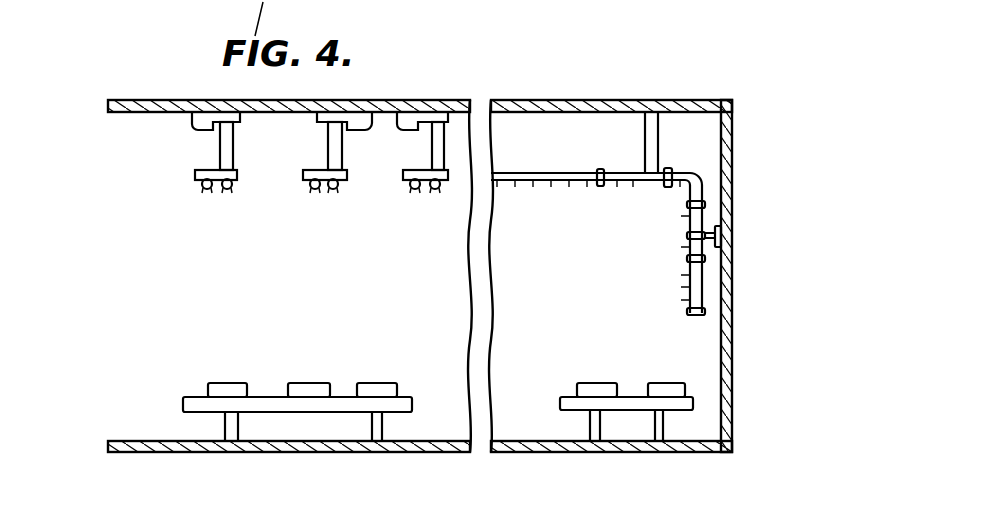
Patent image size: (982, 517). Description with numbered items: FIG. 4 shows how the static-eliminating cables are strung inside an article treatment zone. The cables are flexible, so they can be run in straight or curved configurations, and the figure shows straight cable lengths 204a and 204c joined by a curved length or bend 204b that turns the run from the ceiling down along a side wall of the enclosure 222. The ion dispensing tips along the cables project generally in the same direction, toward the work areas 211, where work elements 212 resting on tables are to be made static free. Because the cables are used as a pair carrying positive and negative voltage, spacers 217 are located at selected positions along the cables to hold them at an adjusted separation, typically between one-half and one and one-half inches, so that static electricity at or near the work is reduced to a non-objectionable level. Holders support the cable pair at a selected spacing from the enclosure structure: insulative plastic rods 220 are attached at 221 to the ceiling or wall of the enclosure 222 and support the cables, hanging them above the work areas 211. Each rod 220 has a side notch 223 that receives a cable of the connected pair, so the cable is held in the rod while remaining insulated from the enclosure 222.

The straight cable length 204a is at (557, 170).
The curved length or bend 204b is at (705, 181).
The straight cable length 204c is at (712, 290).
The work area 211 is at (425, 277).
The work element 212 is at (293, 382).
The spacer 217 is at (194, 174).
The insulative plastic rod 220 is at (220, 147).
The attachment 221 is at (200, 112).
The enclosure 222 is at (542, 98).
The side notch 223 is at (841, 8).